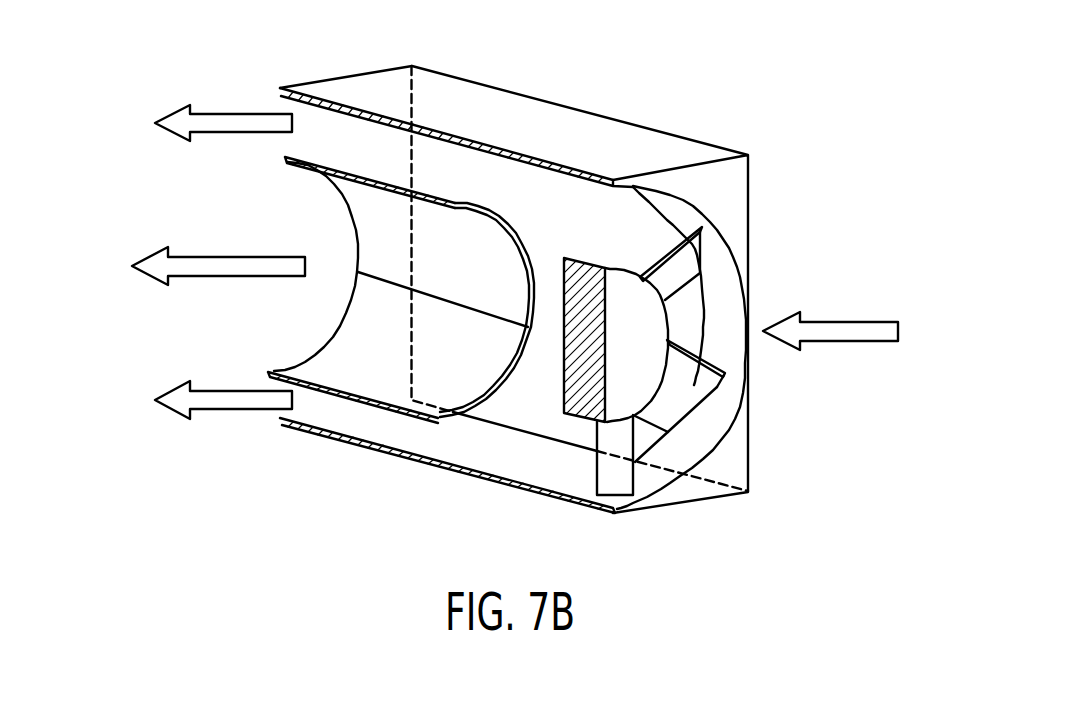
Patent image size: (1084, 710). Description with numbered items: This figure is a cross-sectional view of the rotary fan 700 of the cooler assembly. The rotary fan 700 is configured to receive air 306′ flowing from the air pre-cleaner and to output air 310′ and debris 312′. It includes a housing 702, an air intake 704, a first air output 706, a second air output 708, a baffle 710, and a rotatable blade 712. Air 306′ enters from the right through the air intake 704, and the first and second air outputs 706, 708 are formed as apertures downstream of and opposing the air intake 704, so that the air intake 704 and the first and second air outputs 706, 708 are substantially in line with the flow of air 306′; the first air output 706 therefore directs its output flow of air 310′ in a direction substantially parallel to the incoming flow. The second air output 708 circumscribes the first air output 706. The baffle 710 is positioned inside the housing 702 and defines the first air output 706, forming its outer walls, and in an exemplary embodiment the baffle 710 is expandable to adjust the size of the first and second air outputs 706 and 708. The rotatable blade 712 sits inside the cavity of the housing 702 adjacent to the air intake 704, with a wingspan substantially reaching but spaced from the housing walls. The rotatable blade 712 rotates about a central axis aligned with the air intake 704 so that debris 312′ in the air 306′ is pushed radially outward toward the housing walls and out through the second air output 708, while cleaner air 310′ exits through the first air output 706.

The rotary fan 700 is at (778, 99).
The housing 702 is at (505, 118).
The air intake 704 is at (790, 273).
The first air output 706 is at (282, 324).
The second air output 708 is at (274, 151).
The baffle 710 is at (458, 421).
The rotatable blade 712 is at (675, 397).
The air 306′ is at (836, 341).
The air 310′ is at (150, 277).
The debris 312′ is at (228, 115).